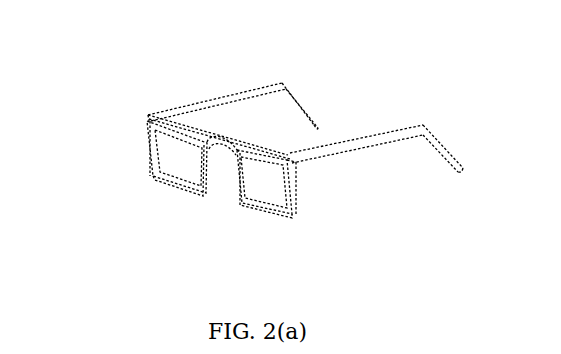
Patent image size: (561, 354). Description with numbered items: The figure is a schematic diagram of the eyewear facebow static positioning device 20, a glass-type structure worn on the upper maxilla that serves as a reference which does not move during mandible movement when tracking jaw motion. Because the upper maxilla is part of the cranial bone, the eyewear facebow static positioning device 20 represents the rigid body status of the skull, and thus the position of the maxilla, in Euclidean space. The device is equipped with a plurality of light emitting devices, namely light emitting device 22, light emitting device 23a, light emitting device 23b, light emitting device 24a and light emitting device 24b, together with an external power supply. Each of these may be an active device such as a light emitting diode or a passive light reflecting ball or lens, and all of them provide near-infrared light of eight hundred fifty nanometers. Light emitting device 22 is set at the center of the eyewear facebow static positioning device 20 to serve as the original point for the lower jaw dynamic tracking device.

The eyewear facebow static positioning device 20 is at (70, 32).
The light emitting device 22 is at (221, 138).
The light emitting device 23a is at (149, 118).
The light emitting device 23b is at (293, 158).
The light emitting device 24a is at (196, 188).
The light emitting device 24b is at (238, 200).